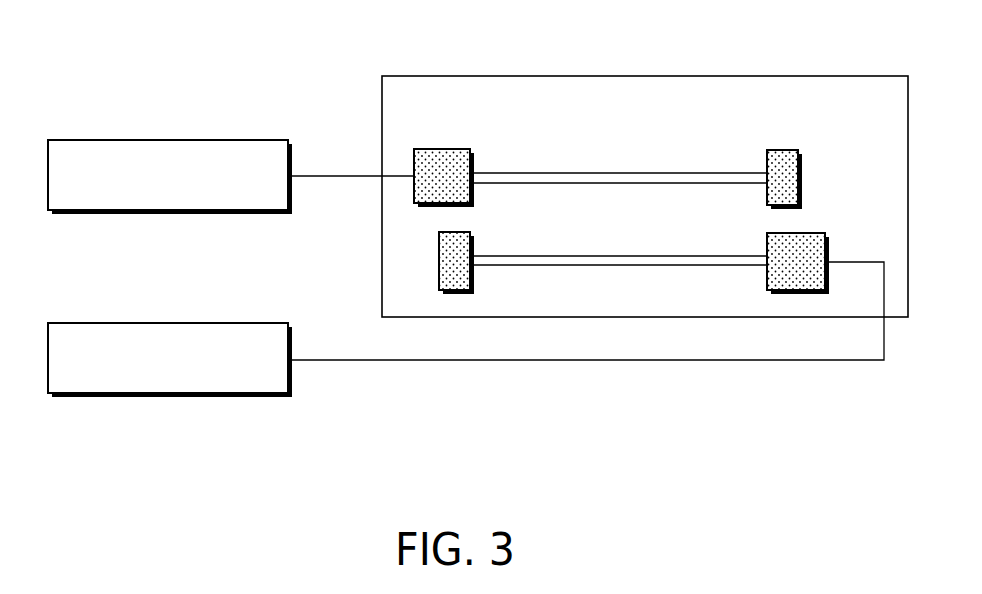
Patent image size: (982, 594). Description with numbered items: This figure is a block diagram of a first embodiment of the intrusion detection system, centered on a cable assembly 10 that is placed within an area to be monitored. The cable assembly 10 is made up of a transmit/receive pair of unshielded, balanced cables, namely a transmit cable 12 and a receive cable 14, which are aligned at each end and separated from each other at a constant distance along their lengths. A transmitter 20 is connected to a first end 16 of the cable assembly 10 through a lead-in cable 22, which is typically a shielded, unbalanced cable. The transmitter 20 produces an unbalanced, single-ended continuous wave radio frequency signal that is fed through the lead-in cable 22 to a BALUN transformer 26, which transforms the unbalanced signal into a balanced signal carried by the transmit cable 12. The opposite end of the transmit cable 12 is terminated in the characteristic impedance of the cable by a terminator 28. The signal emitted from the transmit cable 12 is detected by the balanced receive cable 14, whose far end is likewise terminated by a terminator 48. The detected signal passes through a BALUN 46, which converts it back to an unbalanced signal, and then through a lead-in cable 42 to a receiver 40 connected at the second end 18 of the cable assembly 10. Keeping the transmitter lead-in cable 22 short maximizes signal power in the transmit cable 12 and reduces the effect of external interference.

The cable assembly 10 is at (697, 72).
The transmit cable 12 is at (600, 167).
The receive cable 14 is at (600, 254).
The first end 16 is at (487, 157).
The second end 18 is at (751, 162).
The transmitter 20 is at (183, 140).
The lead-in cable 22 is at (352, 175).
The BALUN transformer 26 is at (453, 147).
The terminator 28 is at (778, 148).
The receiver 40 is at (183, 323).
The lead-in cable 42 is at (352, 358).
The BALUN 46 is at (806, 233).
The terminator 48 is at (438, 253).